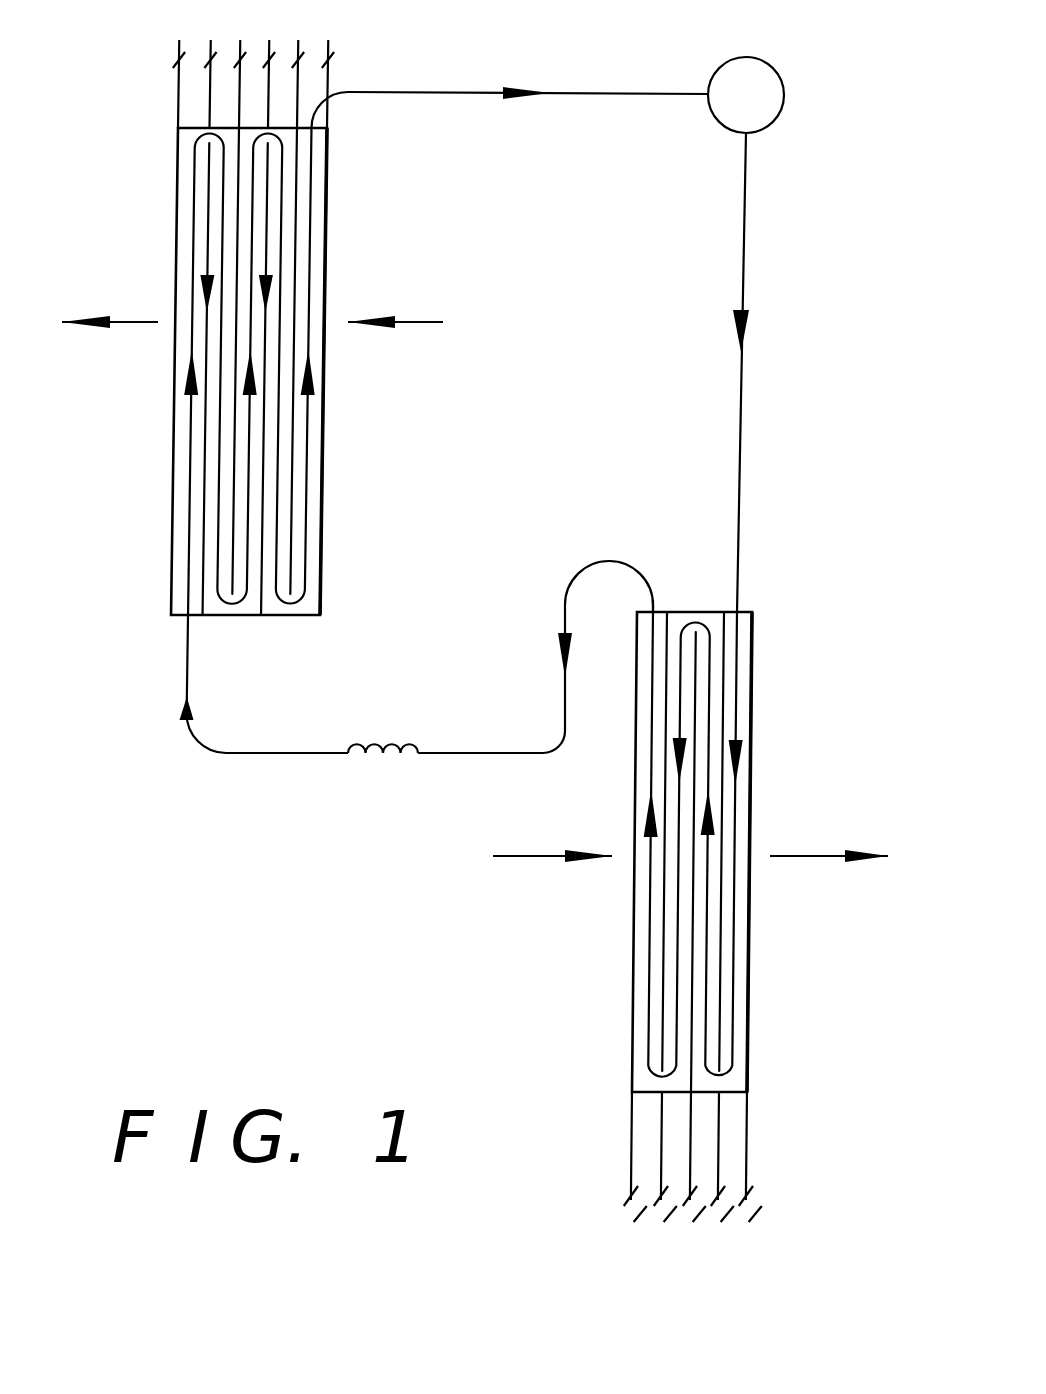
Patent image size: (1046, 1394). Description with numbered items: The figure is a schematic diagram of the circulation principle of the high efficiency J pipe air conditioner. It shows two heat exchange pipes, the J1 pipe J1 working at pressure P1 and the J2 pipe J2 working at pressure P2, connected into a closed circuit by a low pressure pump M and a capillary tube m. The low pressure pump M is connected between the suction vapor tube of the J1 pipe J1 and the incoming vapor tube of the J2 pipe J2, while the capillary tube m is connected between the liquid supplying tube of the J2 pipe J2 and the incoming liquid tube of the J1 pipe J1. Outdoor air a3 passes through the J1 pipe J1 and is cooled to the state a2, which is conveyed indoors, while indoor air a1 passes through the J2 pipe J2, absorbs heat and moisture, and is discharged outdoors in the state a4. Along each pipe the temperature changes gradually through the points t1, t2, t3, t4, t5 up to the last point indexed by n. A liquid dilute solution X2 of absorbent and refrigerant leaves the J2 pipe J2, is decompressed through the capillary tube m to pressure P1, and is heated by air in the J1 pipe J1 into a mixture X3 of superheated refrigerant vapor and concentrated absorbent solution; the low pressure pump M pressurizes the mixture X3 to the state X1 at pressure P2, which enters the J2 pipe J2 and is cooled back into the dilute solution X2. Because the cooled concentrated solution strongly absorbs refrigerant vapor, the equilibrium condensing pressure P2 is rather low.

The J1 pipe J1 is at (224, 615).
The J2 pipe J2 is at (634, 1015).
The low pressure pump M is at (746, 95).
The x1 state X1 is at (713, 372).
The dilute solution x2 X2 is at (598, 632).
The mixture x3 X3 is at (510, 86).
The working pressure P1 is at (391, 400).
The working pressure P2 is at (693, 576).
The capillary tube m is at (362, 762).
The indoor air a1 is at (552, 829).
The cooled air a2 is at (110, 294).
The outdoor air a3 is at (395, 294).
The discharged air a4 is at (829, 831).
The temperature t1 is at (416, 639).
The temperature t2 is at (446, 639).
The temperature t3 is at (476, 639).
The temperature t4 is at (504, 639).
The temperature t5 is at (533, 639).
The element n is at (572, 634).